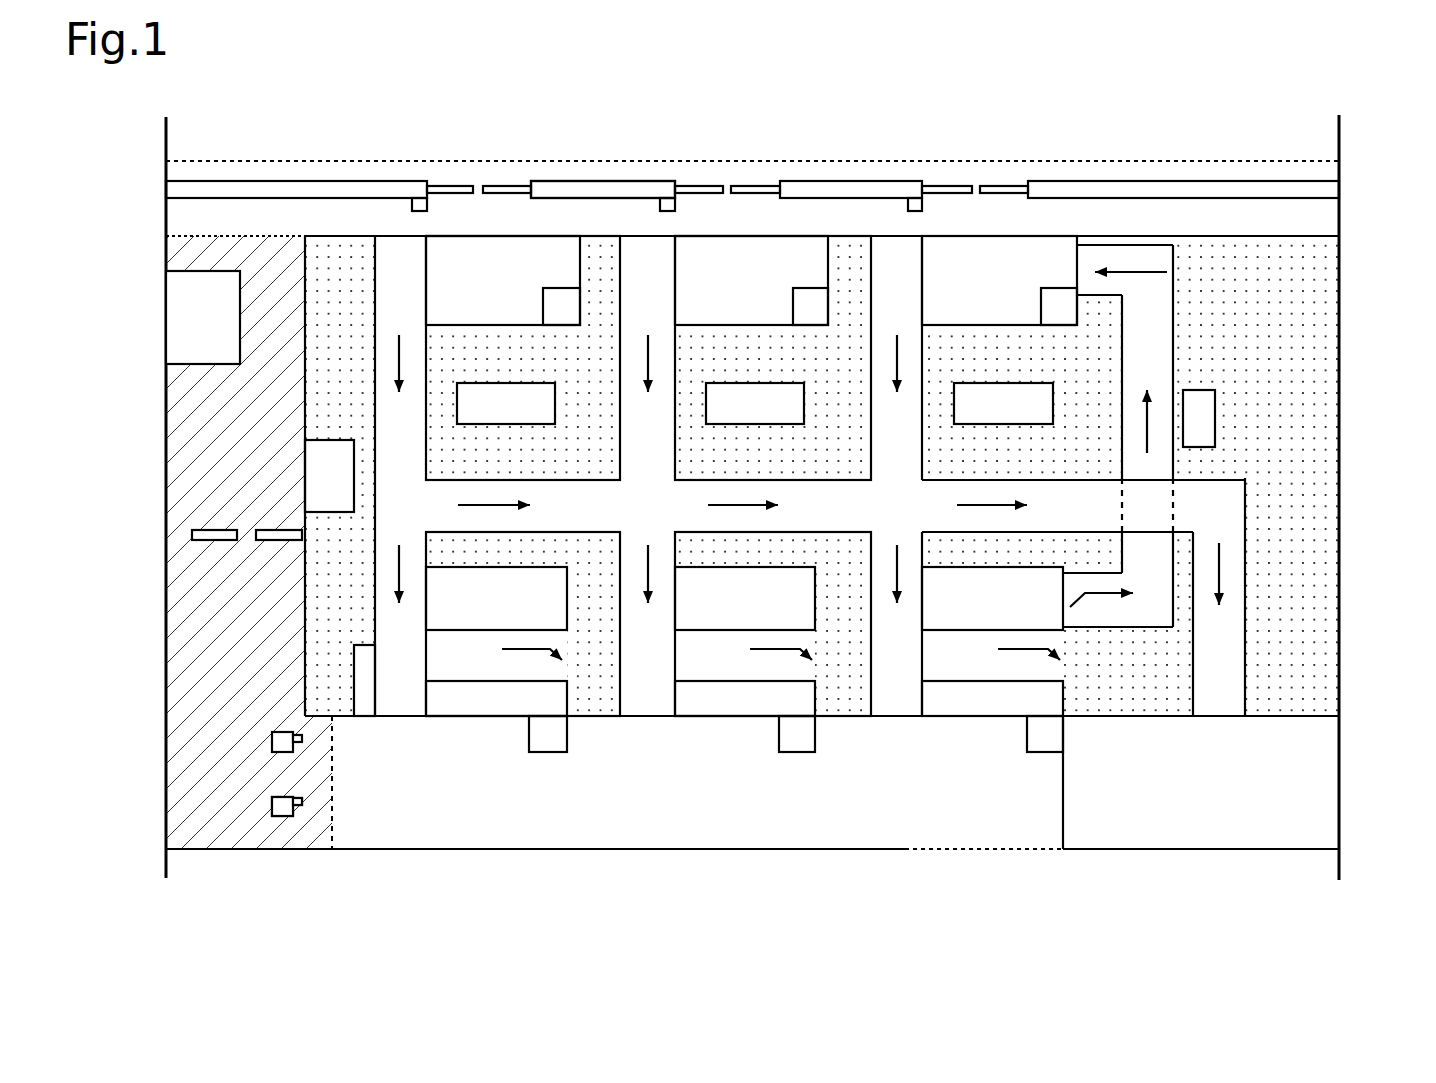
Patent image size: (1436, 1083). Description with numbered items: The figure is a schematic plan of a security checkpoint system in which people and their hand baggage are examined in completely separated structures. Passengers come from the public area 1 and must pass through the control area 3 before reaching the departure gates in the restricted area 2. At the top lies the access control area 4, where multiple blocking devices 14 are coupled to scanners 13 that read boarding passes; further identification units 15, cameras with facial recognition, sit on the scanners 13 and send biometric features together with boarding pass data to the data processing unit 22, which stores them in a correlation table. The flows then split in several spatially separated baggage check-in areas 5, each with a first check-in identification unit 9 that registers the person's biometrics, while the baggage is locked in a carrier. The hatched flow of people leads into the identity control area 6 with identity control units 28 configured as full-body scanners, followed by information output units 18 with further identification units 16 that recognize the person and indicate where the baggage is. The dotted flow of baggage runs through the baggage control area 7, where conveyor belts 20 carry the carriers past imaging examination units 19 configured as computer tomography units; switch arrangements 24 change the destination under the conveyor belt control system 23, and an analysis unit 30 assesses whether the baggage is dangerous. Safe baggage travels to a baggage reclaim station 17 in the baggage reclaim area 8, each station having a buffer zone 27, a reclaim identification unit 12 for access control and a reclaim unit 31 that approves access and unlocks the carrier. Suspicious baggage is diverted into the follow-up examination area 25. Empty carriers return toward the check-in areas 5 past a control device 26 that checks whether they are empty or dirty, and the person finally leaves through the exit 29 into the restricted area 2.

The public area 1 is at (197, 140).
The restricted area 2 is at (1327, 865).
The control area 3 is at (1352, 580).
The access control area 4 is at (728, 176).
The baggage check-in area 5 is at (494, 296).
The identity control area 6 is at (188, 440).
The baggage control area 7 is at (1213, 362).
The baggage reclaim area 8 is at (820, 823).
The first check-in identification unit 9 is at (552, 323).
The reclaim identification unit 12 is at (531, 747).
The scanner 13 is at (602, 190).
The blocking device 14 is at (465, 188).
The further identification unit 15 is at (418, 200).
The further identification unit 16 is at (293, 805).
The baggage reclaim station 17 is at (479, 613).
The information output unit 18 is at (280, 816).
The imaging examination unit 19 is at (489, 417).
The conveyor belt 20 is at (383, 520).
The data processing unit 22 is at (186, 332).
The conveyor belt control system 23 is at (367, 703).
The switch arrangement 24 is at (942, 520).
The follow-up examination area 25 is at (1313, 835).
The control device 26 is at (1198, 418).
The buffer zone 27 is at (715, 675).
The identity control unit 28 is at (213, 535).
The exit 29 is at (1128, 280).
The analysis unit 30 is at (312, 488).
The reclaim unit 31 is at (479, 712).